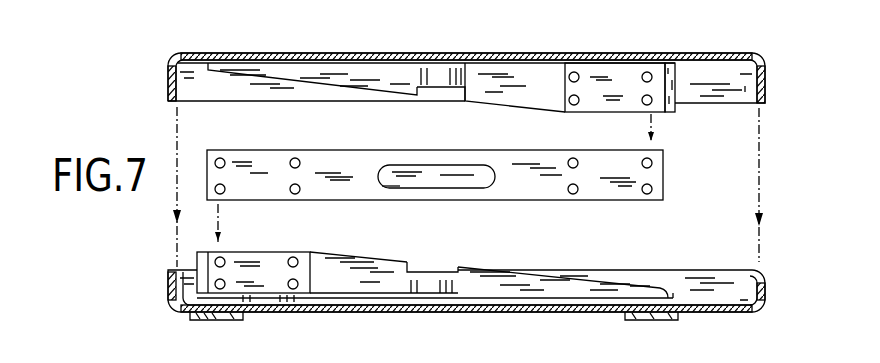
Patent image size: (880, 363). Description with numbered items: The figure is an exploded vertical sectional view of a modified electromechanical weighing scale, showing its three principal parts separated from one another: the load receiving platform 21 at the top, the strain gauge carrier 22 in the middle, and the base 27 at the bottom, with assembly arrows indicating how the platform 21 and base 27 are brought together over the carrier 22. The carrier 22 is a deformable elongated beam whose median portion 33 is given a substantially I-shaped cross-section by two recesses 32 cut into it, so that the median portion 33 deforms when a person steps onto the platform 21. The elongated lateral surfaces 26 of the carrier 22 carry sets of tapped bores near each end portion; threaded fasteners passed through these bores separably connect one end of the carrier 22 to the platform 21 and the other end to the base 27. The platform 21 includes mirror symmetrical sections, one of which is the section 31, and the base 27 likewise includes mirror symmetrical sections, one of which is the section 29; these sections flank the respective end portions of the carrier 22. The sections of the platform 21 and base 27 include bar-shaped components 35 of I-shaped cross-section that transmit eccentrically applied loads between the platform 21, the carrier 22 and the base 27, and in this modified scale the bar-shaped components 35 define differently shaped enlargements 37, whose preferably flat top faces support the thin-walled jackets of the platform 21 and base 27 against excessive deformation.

The load receiving and transmitting member (platform) 21 is at (717, 77).
The carrier 22 is at (435, 195).
The elongated lateral surface 26 is at (267, 175).
The base 27 is at (720, 294).
The section of the base 29 is at (267, 280).
The section of the platform 31 is at (625, 80).
The recess 32 is at (443, 182).
The median portion 33 is at (398, 192).
The bar-shaped component 35 is at (297, 70).
The enlargement 37 is at (436, 76).